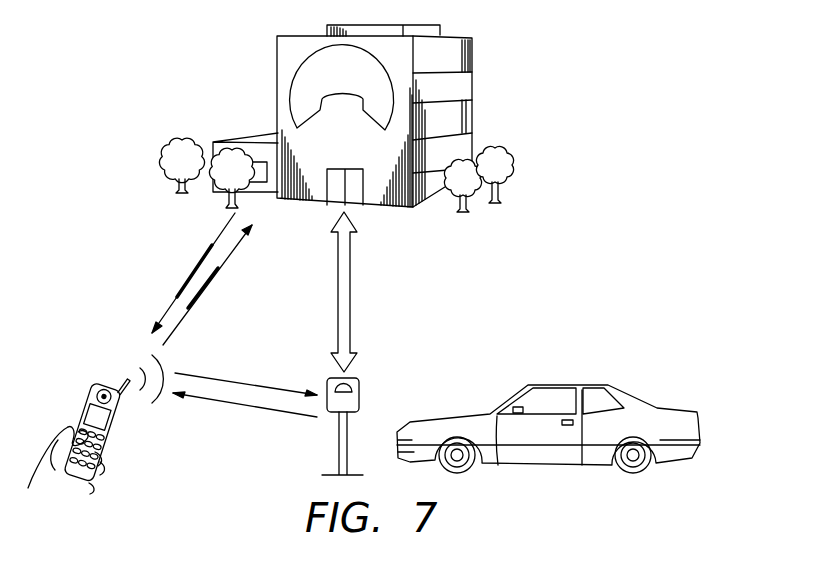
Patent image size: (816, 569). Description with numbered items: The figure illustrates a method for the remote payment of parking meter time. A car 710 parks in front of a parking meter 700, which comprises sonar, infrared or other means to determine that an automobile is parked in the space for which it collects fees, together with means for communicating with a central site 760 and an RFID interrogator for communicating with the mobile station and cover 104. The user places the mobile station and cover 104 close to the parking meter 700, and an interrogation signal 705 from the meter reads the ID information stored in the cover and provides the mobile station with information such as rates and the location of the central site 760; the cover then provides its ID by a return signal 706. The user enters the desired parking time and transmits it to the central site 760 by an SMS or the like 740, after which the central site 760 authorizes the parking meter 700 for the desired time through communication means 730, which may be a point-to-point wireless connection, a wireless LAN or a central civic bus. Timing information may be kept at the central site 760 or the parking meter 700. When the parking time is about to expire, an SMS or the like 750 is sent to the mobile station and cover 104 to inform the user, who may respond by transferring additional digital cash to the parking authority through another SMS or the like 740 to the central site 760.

The mobile station and cover 104 is at (102, 380).
The parking meter 700 is at (360, 395).
The interrogation signal 705 is at (198, 398).
The return signal 706 is at (285, 389).
The car 710 is at (570, 382).
The communication means 730 is at (352, 293).
The SMS or the like 740 is at (196, 304).
The SMS or the like 750 is at (210, 248).
The central site 760 is at (473, 113).